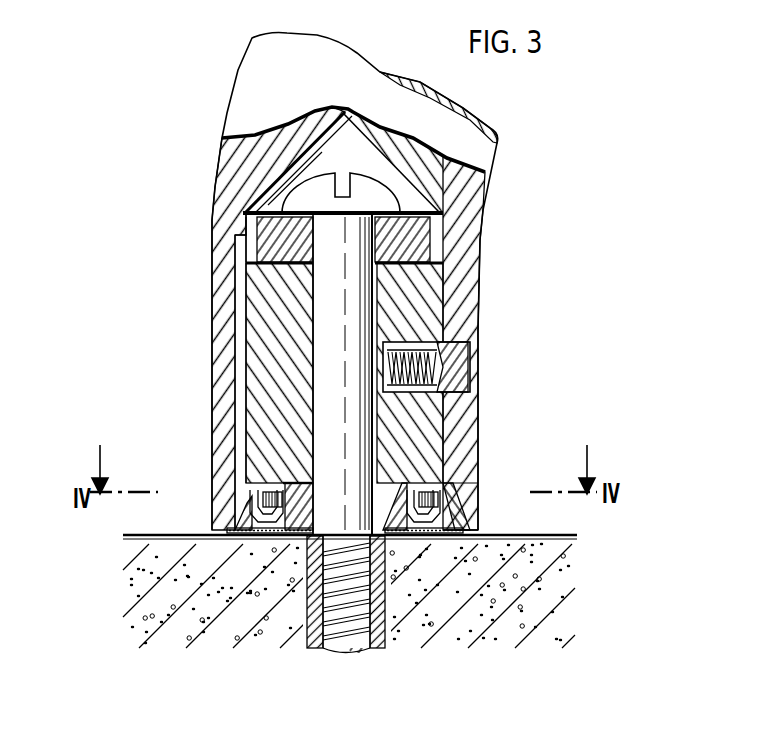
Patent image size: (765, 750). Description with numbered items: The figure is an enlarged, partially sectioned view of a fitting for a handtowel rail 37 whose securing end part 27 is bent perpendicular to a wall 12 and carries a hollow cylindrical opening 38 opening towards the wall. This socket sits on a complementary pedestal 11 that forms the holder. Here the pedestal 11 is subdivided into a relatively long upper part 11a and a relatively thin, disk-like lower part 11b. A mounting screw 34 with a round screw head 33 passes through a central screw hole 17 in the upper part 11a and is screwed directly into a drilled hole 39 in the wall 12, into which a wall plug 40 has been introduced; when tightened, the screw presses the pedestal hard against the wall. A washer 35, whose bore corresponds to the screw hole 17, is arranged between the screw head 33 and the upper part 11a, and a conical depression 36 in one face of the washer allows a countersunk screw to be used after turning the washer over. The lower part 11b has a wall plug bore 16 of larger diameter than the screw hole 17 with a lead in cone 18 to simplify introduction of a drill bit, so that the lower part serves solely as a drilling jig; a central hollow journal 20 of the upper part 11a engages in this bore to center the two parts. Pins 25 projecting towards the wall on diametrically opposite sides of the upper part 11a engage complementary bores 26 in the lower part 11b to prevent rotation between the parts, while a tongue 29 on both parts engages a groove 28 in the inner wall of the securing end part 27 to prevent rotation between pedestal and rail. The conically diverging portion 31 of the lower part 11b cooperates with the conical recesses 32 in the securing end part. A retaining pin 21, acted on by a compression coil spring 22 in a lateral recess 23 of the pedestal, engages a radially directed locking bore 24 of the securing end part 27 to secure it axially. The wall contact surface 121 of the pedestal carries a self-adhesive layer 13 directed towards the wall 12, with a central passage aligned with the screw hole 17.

The pedestal 11 is at (238, 388).
The upper part of the pedestal 11a is at (438, 298).
The lower part of the pedestal 11b is at (446, 480).
The wall 12 is at (228, 632).
The wall contact surface 121 is at (240, 538).
The self-adhesive layer 13 is at (280, 538).
The wall plug bore 16 is at (388, 540).
The screw hole 17 is at (366, 289).
The lead in cone 18 is at (399, 481).
The central hollow journal 20 is at (305, 503).
The retaining pin 21 is at (470, 358).
The compression coil spring 22 is at (396, 392).
The lateral recess 23 is at (393, 345).
The locking bore 24 is at (470, 381).
The pins 25 is at (258, 498).
The complementary bores 26 is at (265, 537).
The securing end part 27 is at (222, 432).
The groove 28 is at (238, 254).
The tongue 29 is at (240, 320).
The conically diverging portion 31 is at (455, 540).
The conical recesses 32 is at (461, 517).
The screw head 33 is at (410, 198).
The mounting screw 34 is at (332, 350).
The washer 35 is at (258, 232).
The conical depression 36 is at (382, 250).
The handtowel rail 37 is at (230, 56).
The hollow cylindrical opening 38 is at (437, 241).
The drilled hole 39 is at (385, 612).
The wall plug 40 is at (315, 615).